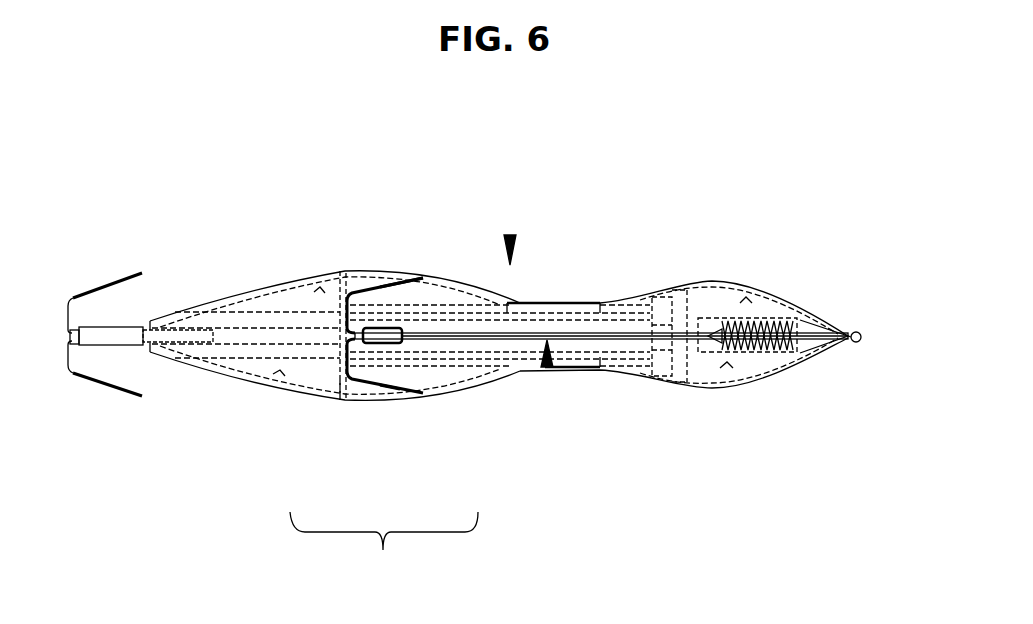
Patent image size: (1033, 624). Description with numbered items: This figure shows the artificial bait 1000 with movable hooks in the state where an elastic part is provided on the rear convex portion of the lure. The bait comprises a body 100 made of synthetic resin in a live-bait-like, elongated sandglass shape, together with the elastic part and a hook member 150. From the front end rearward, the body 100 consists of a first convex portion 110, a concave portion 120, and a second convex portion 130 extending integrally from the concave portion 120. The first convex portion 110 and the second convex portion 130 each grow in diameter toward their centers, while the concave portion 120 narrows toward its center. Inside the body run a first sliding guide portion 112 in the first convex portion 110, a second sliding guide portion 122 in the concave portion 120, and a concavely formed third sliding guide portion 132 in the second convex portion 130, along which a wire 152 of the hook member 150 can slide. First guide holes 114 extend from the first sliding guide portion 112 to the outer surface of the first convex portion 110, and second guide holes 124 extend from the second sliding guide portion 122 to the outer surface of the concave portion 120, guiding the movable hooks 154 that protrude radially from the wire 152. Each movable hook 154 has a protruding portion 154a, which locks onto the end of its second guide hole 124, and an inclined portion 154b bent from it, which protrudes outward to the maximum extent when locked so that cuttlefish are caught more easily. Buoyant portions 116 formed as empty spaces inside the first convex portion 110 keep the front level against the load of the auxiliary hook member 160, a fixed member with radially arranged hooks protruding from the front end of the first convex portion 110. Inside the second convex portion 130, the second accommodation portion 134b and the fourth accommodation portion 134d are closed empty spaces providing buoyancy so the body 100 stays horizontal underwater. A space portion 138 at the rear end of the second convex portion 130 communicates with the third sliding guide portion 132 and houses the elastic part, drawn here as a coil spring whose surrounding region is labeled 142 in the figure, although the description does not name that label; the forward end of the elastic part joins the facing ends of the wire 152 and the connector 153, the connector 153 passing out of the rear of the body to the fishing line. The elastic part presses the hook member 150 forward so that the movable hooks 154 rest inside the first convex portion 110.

The artificial bait 1000 is at (227, 126).
The body 100 is at (510, 235).
The first convex portion 110 is at (372, 271).
The first sliding guide portion 112 is at (440, 305).
The first guide holes 114 is at (410, 280).
The buoyant portions 116 is at (320, 290).
The concave portion 120 is at (597, 305).
The second sliding guide portion 122 is at (556, 303).
The second guide holes 124 is at (578, 303).
The second convex portion 130 is at (735, 282).
The third sliding guide portion 132 is at (803, 327).
The second accommodation portion 134b is at (746, 300).
The fourth accommodation portion 134d is at (727, 365).
The space portion 138 is at (757, 352).
The spring chamber 142 is at (787, 352).
The hook member 150 is at (547, 367).
The wire 152 is at (497, 368).
The connector 153 is at (858, 342).
The movable hooks 154 is at (384, 549).
The protruding portion 154a is at (340, 395).
The inclined portion 154b is at (393, 390).
The auxiliary hook member 160 is at (108, 283).